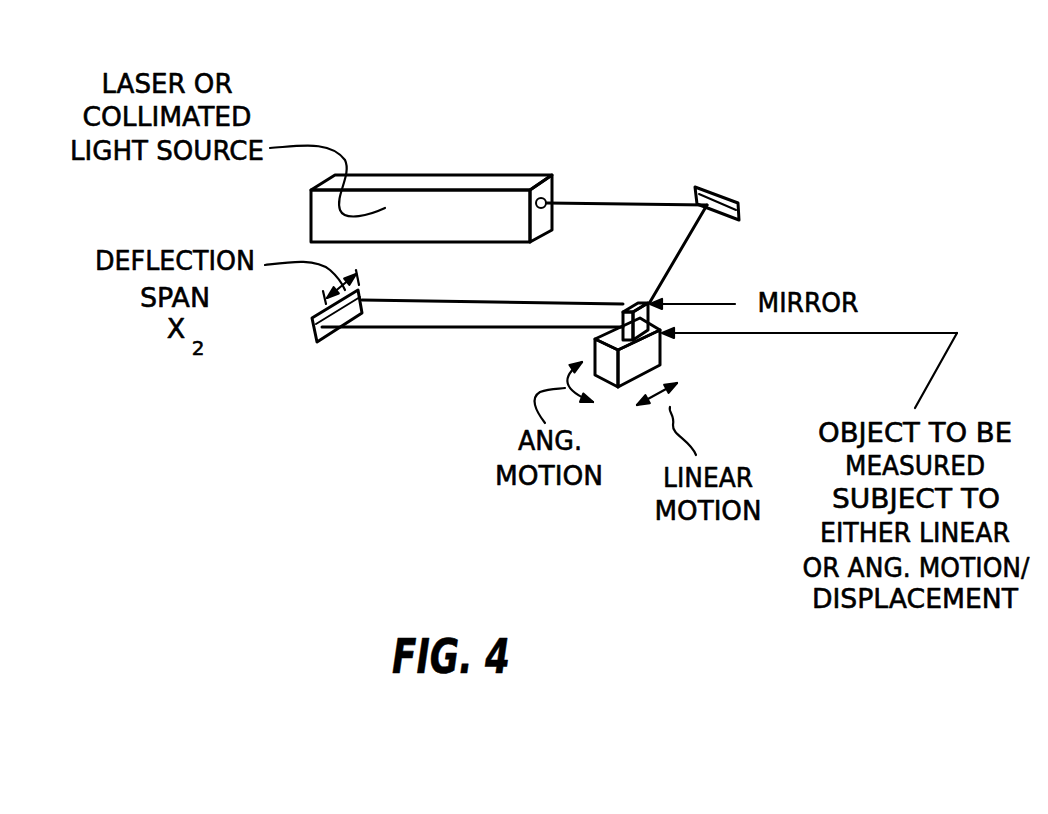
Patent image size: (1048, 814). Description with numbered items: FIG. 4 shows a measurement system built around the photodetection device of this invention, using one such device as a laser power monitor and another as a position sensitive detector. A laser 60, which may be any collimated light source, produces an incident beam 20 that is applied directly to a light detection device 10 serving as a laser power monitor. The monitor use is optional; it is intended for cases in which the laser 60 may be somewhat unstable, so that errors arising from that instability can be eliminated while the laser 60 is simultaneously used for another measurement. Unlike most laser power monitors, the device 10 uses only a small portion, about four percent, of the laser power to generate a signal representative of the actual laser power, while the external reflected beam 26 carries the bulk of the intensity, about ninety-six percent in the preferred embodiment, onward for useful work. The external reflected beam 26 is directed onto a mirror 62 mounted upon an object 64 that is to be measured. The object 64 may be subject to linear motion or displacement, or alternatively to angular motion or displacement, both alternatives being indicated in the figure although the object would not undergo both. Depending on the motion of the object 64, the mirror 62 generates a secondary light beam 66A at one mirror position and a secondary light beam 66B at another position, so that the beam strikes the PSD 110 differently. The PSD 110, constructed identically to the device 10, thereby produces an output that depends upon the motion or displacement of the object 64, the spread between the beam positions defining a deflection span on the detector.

The laser 60 is at (435, 182).
The incident beam 20 is at (613, 203).
The light detection device 10 is at (824, 120).
The external reflected beam 26 is at (818, 234).
The mirror 62 is at (633, 303).
The object 64 is at (635, 365).
The secondary light beam 66A is at (418, 300).
The secondary light beam 66B is at (553, 327).
The PSD 110 is at (263, 405).